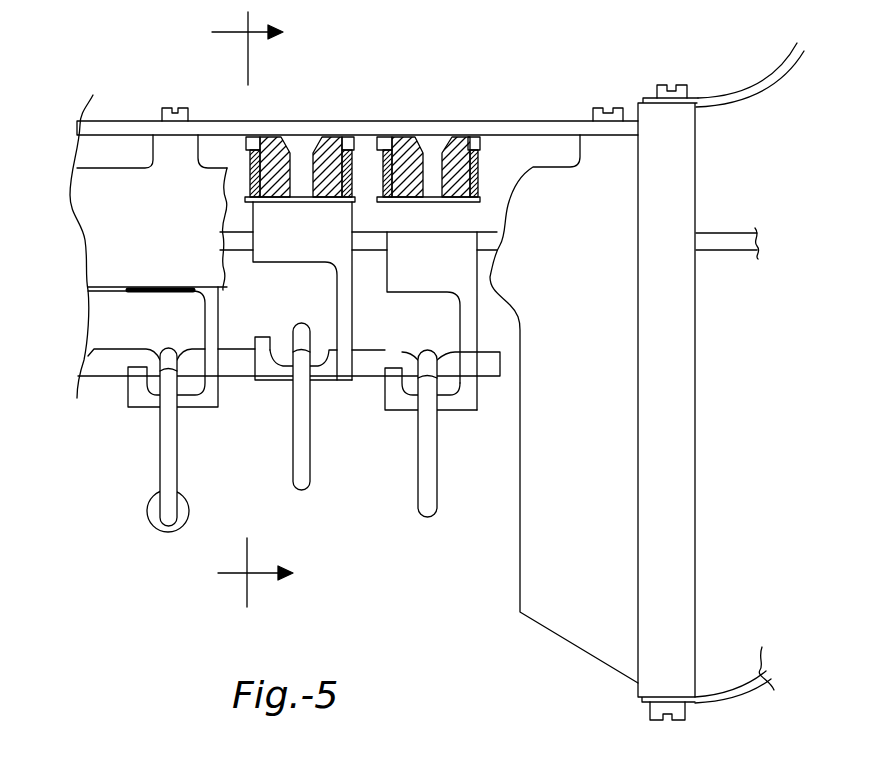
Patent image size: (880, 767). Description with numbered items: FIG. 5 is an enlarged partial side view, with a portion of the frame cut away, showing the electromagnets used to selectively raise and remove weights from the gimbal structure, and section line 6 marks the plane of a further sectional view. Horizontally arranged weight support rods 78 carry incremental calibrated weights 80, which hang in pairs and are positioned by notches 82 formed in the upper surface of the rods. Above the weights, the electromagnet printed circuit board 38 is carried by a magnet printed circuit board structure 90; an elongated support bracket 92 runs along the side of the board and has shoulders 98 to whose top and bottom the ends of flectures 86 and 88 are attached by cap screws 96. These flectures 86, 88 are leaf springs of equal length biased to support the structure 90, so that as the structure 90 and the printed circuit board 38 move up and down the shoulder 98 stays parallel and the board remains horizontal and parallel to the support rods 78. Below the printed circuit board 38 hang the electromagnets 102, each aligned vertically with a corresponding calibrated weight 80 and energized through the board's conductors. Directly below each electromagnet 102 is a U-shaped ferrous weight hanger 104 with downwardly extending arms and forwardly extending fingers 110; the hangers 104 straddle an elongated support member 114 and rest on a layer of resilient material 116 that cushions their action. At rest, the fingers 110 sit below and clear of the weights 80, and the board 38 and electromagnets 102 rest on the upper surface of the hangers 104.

The section line 6- 6 is at (261, 309).
The printed circuit board 38 is at (537, 125).
The weight support rods 78 is at (237, 367).
The calibrated weights 80 is at (150, 508).
The notches 82 is at (167, 350).
The flecture 86 is at (743, 85).
The flecture 88 is at (763, 682).
The magnet printed circuit board structure 90 is at (552, 662).
The support bracket 92 is at (88, 205).
The cap screws 96 is at (655, 86).
The shoulders 98 is at (682, 467).
The electromagnets 102 is at (268, 147).
The weight hanger 104 is at (270, 232).
The fingers 110 is at (337, 380).
The support member 114 is at (372, 253).
The resilient material 116 is at (363, 232).